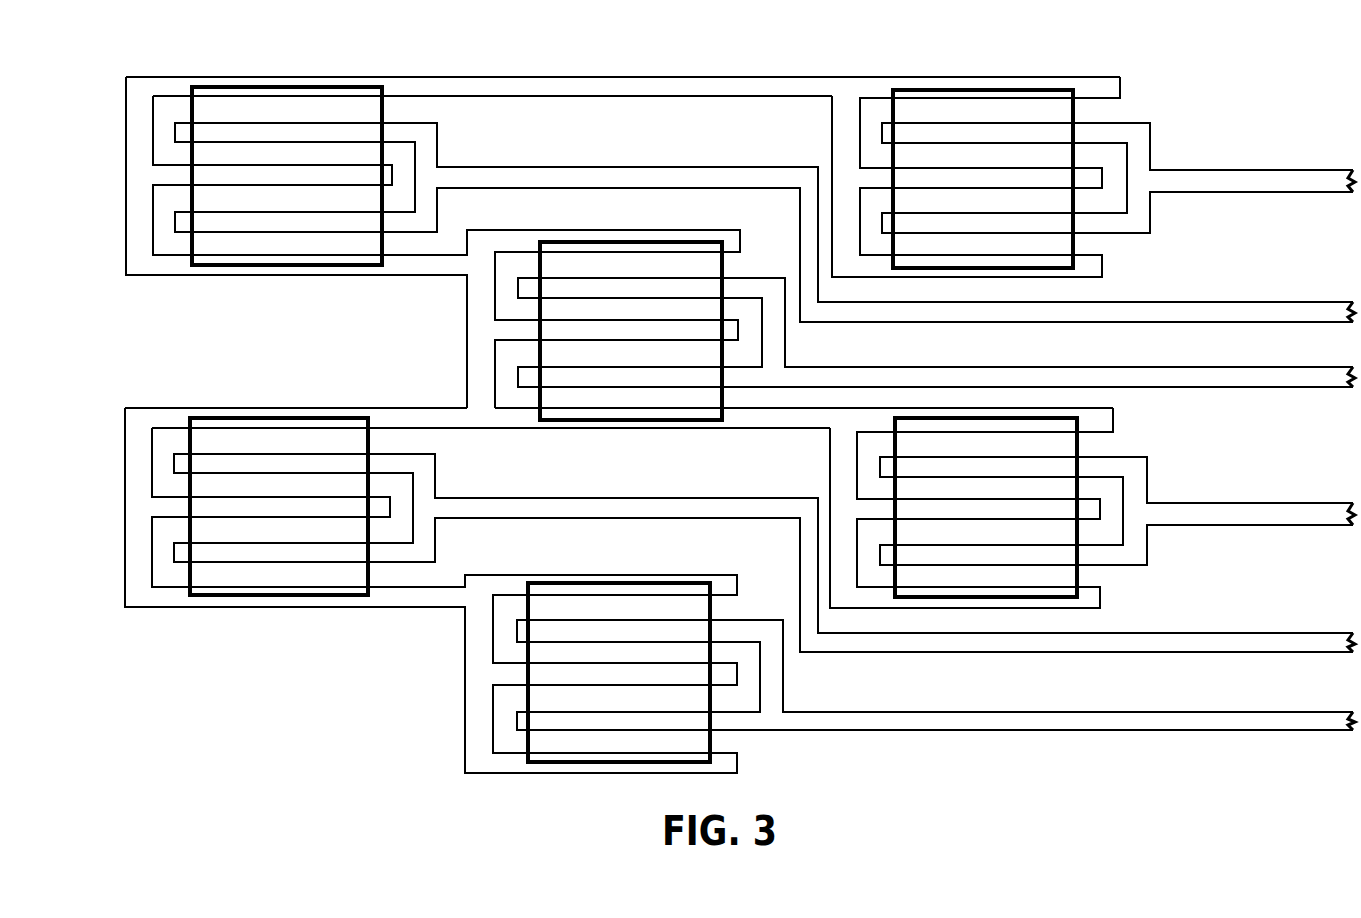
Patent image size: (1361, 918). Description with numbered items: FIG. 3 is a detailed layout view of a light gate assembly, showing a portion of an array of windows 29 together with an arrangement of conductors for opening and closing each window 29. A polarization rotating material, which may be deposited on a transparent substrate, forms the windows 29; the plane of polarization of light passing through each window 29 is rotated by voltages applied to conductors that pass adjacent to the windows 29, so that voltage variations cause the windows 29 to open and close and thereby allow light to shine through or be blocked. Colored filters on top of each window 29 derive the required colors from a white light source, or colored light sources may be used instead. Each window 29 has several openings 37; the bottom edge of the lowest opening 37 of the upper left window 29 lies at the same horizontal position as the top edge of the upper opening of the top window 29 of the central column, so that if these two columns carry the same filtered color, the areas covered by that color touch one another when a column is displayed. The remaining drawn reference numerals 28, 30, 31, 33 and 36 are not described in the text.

The conductive trace 28 is at (673, 125).
The window 29 is at (115, 68).
The crossover trace 30 is at (448, 472).
The trace portion 31 is at (433, 416).
The contact pad 33 is at (187, 130).
The sensing layer boundary 36 is at (235, 112).
The opening 37 is at (343, 250).